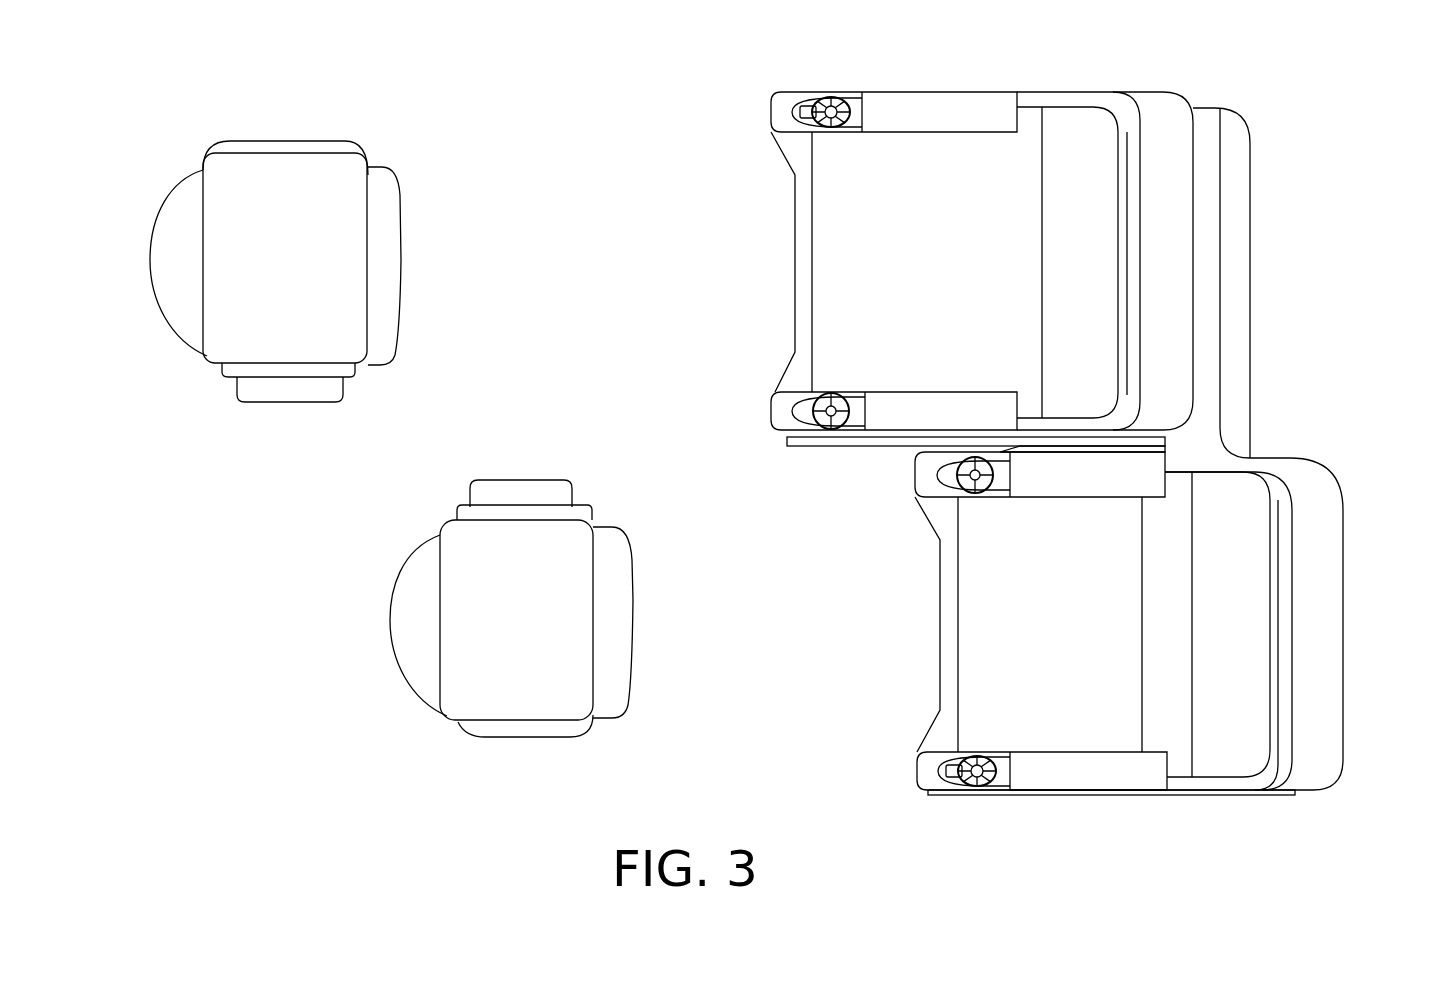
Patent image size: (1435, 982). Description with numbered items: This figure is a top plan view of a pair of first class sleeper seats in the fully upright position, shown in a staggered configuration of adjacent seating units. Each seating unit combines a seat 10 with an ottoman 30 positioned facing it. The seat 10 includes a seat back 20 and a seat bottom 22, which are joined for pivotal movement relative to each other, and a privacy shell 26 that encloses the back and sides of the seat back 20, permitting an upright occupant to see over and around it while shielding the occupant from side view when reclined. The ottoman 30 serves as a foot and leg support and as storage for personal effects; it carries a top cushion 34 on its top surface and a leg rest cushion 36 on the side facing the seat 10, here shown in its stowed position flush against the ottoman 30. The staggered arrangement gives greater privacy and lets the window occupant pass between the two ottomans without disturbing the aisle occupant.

The first class sleeper seat 10 is at (792, 68).
The seat back 20 is at (1063, 150).
The seat bottom 22 is at (1066, 623).
The privacy shell 26 is at (1165, 231).
The ottoman 30 is at (348, 686).
The top cushion 34 is at (296, 267).
The leg rest cushion 36 is at (381, 246).